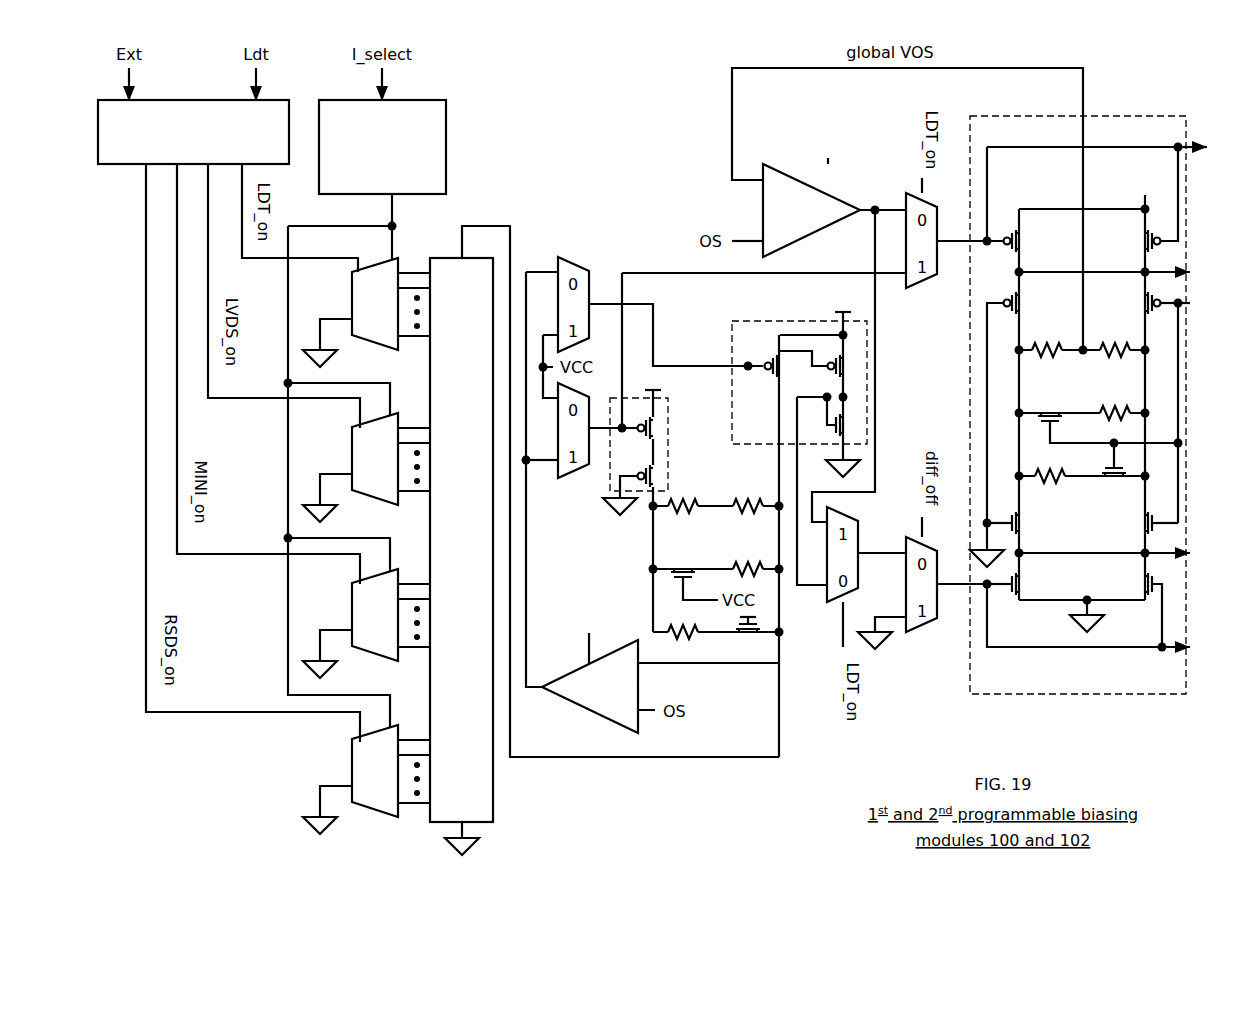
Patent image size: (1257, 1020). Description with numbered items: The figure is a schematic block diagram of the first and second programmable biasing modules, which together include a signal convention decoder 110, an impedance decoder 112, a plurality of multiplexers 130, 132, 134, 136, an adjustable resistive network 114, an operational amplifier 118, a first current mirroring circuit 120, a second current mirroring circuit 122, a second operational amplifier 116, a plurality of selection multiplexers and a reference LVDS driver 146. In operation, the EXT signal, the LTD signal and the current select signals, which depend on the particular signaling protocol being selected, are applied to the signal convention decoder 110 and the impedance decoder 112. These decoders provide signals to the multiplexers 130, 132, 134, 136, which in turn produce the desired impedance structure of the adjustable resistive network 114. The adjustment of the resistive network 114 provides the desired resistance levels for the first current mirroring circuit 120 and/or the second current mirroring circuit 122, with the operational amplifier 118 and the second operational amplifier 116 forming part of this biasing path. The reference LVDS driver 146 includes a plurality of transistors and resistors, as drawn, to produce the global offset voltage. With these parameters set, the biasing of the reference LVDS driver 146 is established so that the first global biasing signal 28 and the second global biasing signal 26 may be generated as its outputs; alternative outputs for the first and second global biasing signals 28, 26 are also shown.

The signal convention decoder 110 is at (193, 132).
The impedance decoder 112 is at (382, 147).
The adjustable resistive network 114 is at (461, 556).
The second operational amplifier 116 is at (811, 177).
The operational amplifier 118 is at (590, 650).
The first current mirroring circuit 120 is at (779, 320).
The second current mirroring circuit 122 is at (668, 460).
The multiplexer 130 is at (366, 312).
The multiplexer 132 is at (366, 467).
The multiplexer 134 is at (366, 623).
The multiplexer 136 is at (366, 779).
The reference LVDS driver 146 is at (1107, 426).
The second global biasing signal 26 is at (1126, 554).
The first global biasing signal 28 is at (1126, 272).